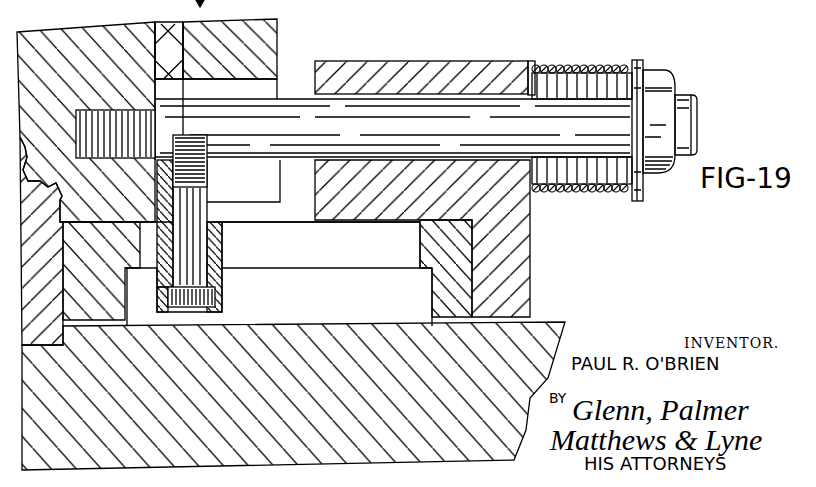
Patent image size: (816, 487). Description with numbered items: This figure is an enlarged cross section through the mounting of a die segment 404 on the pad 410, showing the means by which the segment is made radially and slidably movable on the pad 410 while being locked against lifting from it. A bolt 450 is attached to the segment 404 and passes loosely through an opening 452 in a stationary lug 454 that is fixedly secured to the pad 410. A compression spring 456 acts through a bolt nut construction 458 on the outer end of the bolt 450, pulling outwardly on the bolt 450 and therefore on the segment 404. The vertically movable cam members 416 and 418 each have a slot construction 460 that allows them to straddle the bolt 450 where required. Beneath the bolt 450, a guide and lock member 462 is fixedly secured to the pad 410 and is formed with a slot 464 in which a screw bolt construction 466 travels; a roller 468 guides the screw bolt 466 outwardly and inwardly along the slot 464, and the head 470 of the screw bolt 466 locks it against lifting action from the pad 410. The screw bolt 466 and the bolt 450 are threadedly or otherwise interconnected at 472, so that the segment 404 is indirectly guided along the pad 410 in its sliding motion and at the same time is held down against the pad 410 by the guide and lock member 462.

The die segment 404 is at (81, 36).
The pad 410 is at (281, 330).
The vertically movable cam member 416 is at (272, 36).
The vertically movable cam member 418 is at (163, 35).
The bolt 450 is at (378, 110).
The opening 452 is at (459, 83).
The stationary lug 454 is at (509, 70).
The compression spring 456 is at (603, 72).
The bolt nut construction 458 is at (658, 80).
The slot construction 460 is at (267, 90).
The guide and lock member 462 is at (457, 293).
The slot 464 is at (358, 248).
The screw bolt construction 466 is at (205, 247).
The roller 468 is at (280, 254).
The head 470 is at (218, 298).
The interconnection 472 is at (206, 146).